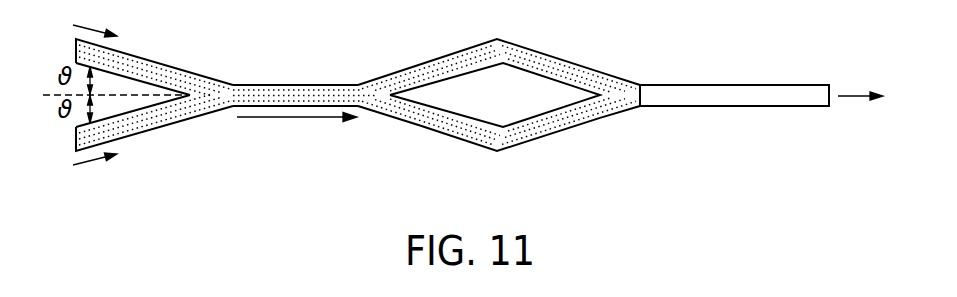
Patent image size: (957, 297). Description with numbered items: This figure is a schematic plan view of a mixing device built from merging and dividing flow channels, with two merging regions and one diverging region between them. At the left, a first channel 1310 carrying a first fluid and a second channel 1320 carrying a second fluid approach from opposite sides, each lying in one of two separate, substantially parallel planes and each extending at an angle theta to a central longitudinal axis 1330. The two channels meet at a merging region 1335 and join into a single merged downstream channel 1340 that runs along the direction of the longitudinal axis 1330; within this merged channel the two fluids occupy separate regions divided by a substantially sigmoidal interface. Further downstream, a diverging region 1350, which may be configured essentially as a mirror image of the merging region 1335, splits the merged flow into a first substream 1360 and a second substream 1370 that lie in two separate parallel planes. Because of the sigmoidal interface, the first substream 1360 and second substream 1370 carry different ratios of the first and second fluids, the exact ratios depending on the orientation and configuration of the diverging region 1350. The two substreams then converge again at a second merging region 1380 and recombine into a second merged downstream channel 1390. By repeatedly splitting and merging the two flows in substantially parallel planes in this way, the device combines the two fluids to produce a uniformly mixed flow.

The first channel 1310 is at (157, 128).
The second channel 1320 is at (153, 62).
The central longitudinal axis 1330 is at (289, 119).
The merging region 1335 is at (233, 83).
The merged downstream channel 1340 is at (310, 83).
The diverging region 1350 is at (353, 84).
The first substream 1360 is at (569, 128).
The second substream 1370 is at (577, 65).
The second merging region 1380 is at (640, 85).
The second merged downstream channel 1390 is at (775, 84).